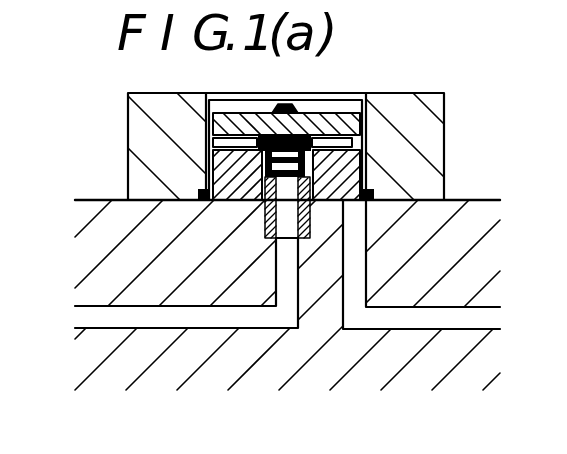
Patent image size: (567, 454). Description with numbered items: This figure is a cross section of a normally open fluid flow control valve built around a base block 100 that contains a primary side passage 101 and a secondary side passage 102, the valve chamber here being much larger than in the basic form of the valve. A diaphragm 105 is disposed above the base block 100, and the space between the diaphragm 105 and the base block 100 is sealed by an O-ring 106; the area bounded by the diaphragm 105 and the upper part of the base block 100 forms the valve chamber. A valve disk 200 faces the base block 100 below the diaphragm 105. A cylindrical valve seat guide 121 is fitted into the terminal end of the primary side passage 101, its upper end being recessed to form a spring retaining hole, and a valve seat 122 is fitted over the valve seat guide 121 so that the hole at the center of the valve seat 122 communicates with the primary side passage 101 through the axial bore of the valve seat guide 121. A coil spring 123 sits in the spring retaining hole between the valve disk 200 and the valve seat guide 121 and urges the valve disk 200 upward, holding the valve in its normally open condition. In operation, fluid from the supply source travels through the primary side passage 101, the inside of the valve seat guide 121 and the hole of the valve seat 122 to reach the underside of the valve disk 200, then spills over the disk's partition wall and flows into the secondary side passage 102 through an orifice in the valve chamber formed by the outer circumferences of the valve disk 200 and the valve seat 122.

The base block 100 is at (472, 202).
The primary side passage 101 is at (87, 318).
The secondary side passage 102 is at (494, 318).
The diaphragm 105 is at (440, 128).
The O-ring 106 is at (200, 203).
The valve seat guide 121 is at (268, 222).
The valve seat 122 is at (213, 173).
The coil spring 123 is at (363, 93).
The valve disk 200 is at (312, 115).